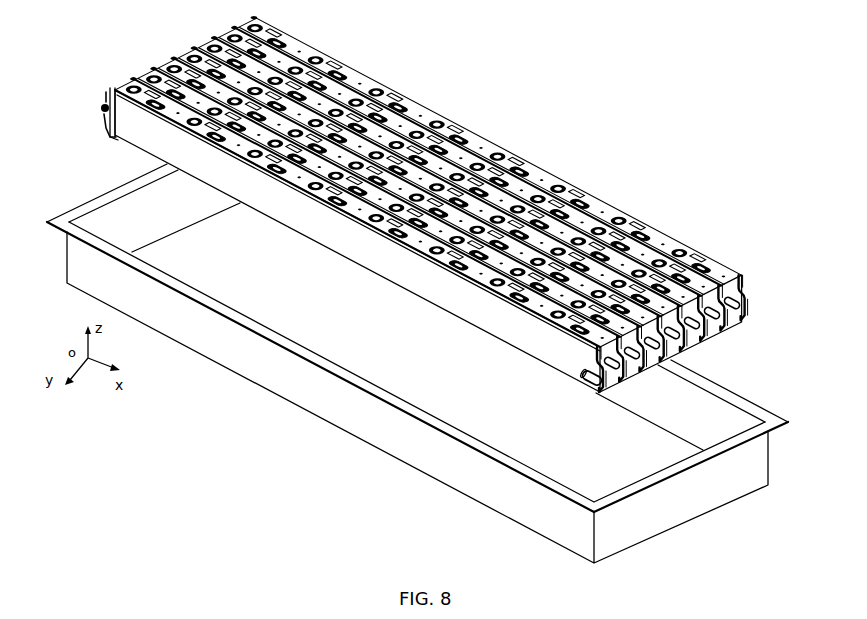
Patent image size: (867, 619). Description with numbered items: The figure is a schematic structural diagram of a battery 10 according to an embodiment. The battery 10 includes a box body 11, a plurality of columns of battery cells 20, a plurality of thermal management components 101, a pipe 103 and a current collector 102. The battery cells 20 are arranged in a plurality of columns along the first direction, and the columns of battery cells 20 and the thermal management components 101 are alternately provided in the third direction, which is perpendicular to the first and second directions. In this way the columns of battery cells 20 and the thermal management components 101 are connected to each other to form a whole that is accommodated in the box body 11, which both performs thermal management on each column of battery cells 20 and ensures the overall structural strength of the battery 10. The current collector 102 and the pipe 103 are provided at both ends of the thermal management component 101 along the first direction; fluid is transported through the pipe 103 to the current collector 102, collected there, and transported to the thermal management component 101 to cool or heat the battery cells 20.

The battery 10 is at (513, 93).
The box body 11 is at (350, 420).
The battery cells 20 is at (710, 263).
The thermal management component 101 is at (160, 140).
The current collector 102 is at (757, 303).
The pipe 103 is at (587, 382).